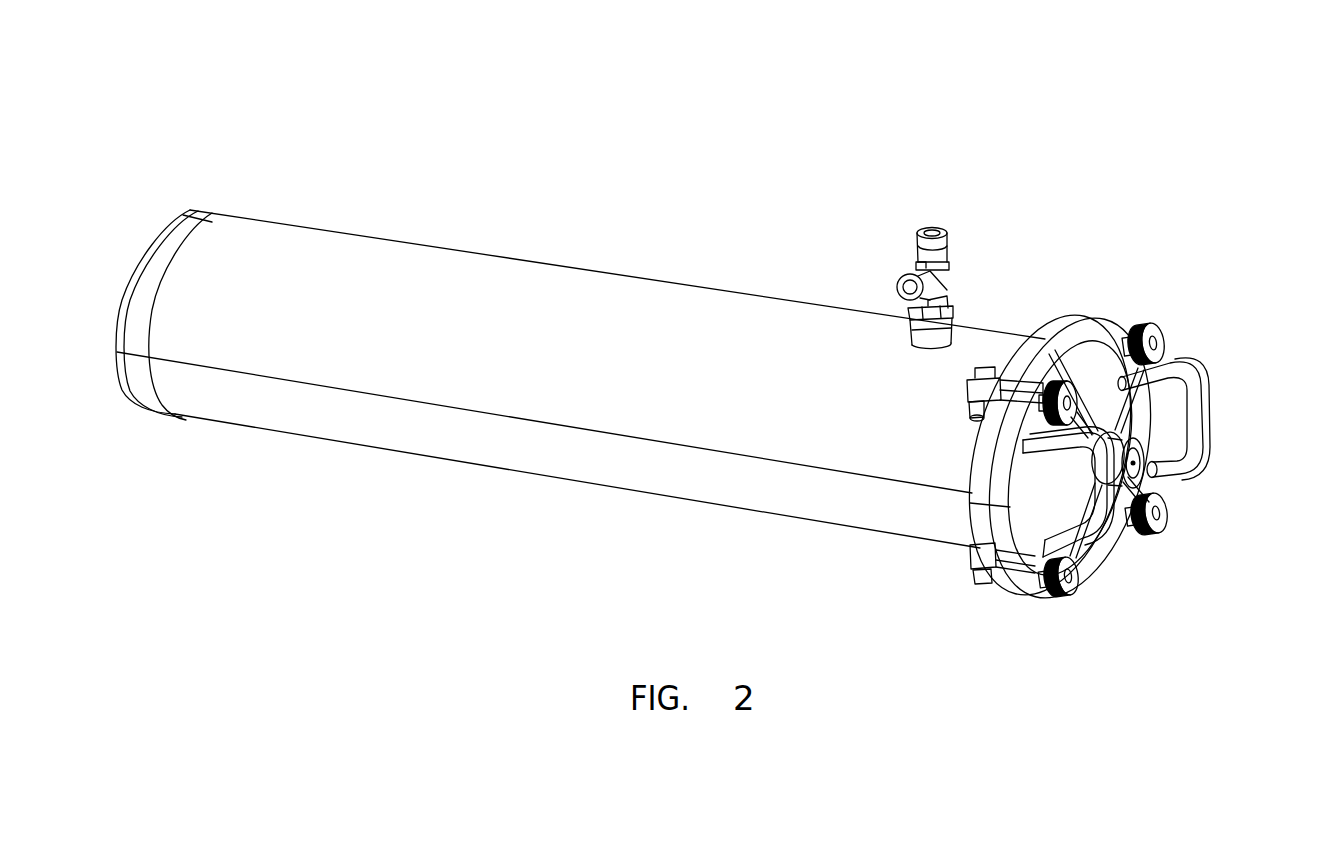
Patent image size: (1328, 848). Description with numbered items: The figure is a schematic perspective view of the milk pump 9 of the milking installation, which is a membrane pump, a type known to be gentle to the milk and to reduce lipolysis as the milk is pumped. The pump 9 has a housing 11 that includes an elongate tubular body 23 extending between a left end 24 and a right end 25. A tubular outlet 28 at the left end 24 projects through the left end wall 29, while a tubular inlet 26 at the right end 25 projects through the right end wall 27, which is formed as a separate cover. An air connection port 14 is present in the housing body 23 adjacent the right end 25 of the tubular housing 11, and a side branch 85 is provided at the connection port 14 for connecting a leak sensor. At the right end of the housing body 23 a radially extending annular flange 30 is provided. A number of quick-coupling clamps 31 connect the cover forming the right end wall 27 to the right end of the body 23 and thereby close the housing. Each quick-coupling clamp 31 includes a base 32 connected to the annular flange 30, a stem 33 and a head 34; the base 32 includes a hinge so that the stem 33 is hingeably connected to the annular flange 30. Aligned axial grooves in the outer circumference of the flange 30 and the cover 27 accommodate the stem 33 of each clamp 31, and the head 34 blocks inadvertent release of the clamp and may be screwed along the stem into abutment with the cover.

The milk pump 9 is at (620, 252).
The housing 11 is at (312, 445).
The elongate tubular body 23 is at (618, 380).
The left end 24 is at (190, 210).
The tubular outlet 28 is at (124, 291).
The left end wall 29 is at (165, 226).
The air connection port 14 is at (937, 229).
The side branch 85 is at (898, 272).
The base 32 is at (988, 378).
The right end wall 27 is at (973, 453).
The stem 33 is at (1040, 328).
The right end 25 is at (1066, 314).
The annular flange 30 is at (983, 530).
The head 34 is at (1070, 395).
The quick-coupling clamps 31 is at (1120, 328).
The tubular inlet 26 is at (1172, 470).